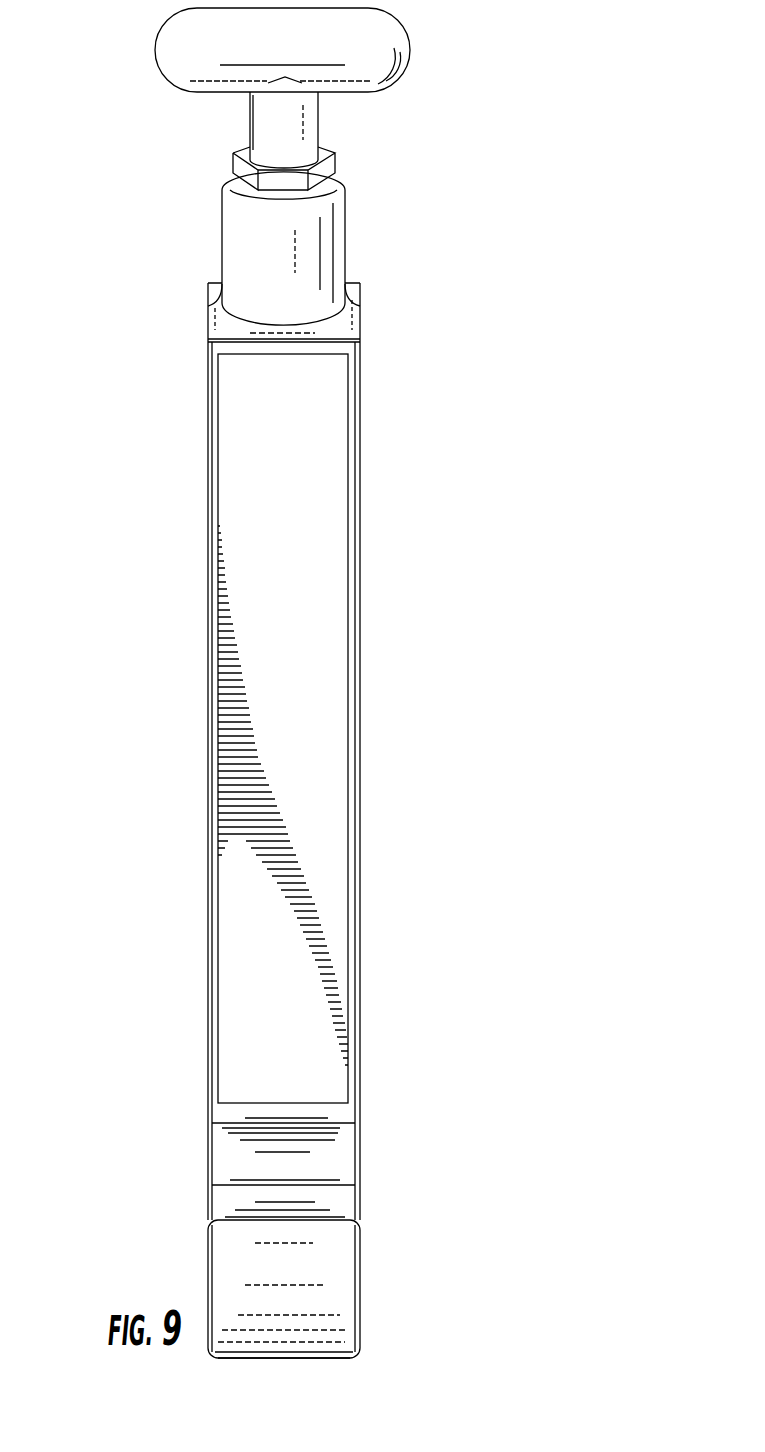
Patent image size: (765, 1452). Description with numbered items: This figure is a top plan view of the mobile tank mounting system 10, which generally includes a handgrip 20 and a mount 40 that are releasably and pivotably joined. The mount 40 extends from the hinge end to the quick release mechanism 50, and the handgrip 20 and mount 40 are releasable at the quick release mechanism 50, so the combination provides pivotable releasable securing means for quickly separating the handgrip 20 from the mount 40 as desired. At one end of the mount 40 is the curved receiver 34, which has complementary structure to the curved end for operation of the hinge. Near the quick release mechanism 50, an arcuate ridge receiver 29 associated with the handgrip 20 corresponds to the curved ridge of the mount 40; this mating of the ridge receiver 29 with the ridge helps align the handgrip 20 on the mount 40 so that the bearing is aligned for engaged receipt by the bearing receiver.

The mobile tank mounting system 10 is at (76, 192).
The quick release mechanism 50 is at (365, 174).
The arcuate ridge receiver 29 is at (322, 330).
The handgrip 20 is at (315, 665).
The mount 40 is at (327, 1262).
The curved receiver 34 is at (315, 1358).